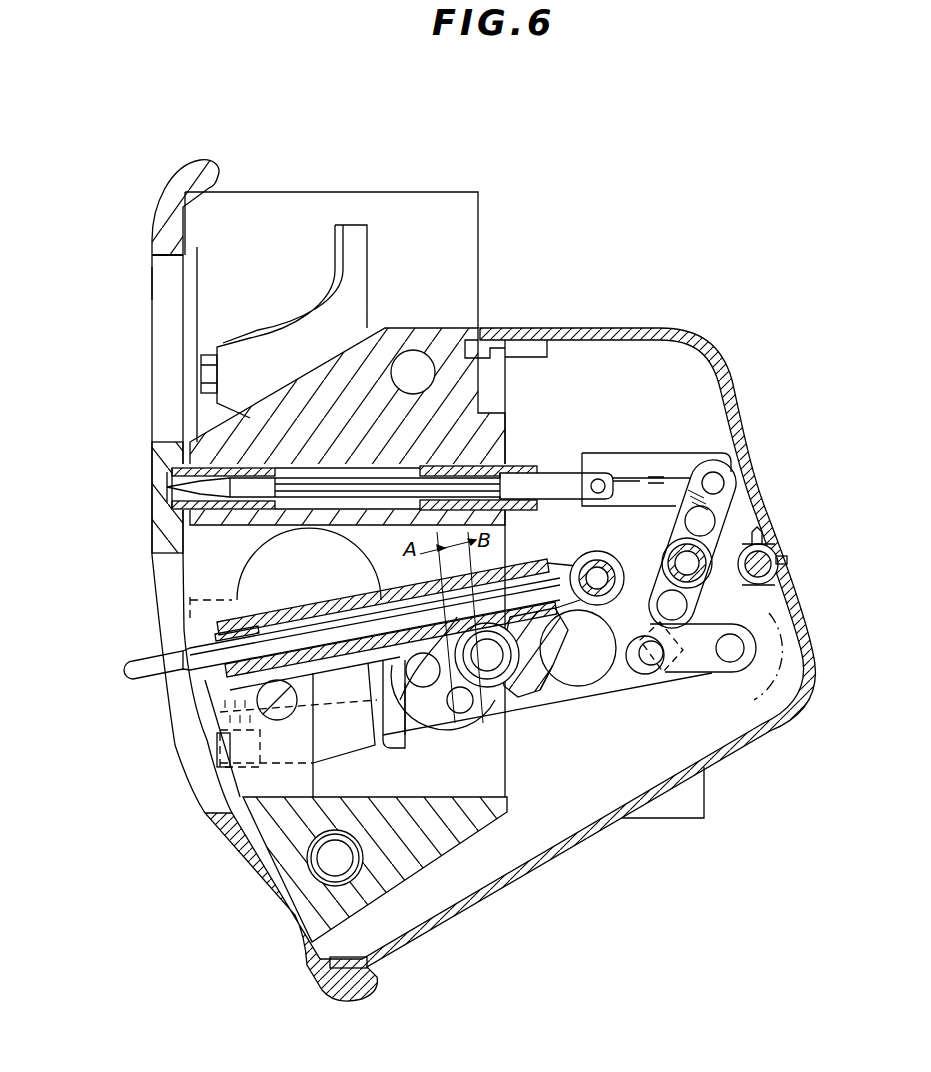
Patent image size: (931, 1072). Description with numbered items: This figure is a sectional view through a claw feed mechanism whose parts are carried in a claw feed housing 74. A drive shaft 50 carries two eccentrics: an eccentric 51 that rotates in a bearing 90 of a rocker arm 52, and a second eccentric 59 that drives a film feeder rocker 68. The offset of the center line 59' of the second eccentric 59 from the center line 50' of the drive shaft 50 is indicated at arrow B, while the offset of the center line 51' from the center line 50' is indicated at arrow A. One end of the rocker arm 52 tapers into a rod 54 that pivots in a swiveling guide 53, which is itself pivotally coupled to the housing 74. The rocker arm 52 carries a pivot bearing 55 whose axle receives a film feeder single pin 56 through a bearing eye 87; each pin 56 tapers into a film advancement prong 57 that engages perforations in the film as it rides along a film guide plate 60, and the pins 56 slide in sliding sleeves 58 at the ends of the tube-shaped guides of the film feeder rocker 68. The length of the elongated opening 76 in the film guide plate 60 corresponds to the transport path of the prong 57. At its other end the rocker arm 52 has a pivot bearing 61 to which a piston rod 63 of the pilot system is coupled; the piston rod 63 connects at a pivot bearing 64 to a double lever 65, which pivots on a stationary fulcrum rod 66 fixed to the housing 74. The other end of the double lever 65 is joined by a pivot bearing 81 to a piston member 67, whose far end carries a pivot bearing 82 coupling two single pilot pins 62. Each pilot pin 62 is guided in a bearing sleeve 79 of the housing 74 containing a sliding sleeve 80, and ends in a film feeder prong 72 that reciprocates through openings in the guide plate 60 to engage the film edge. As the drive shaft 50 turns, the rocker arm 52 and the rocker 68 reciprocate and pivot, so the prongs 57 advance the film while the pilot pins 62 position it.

The claw feed housing 74 is at (470, 338).
The bearing sleeve 79 is at (363, 437).
The single pilot pin 62 is at (265, 432).
The sliding sleeve 80 is at (203, 447).
The pivot bearing 82 is at (599, 478).
The piston member 67 is at (637, 493).
The pivot bearing 81 is at (714, 475).
The double lever 65 is at (704, 521).
The film feeder prong 72 is at (183, 495).
The sliding sleeve 58 is at (207, 633).
The film advancement prong 57 is at (140, 662).
The center line of eccentric 51' is at (397, 618).
The pivot bearing 55 is at (592, 552).
The bearing eye 87 is at (606, 556).
The stationary fulcrum rod 66 is at (693, 578).
The piston rod 63 is at (743, 618).
The film feeder single pin 56 is at (190, 670).
The film feeder rocker 68 is at (378, 712).
The drive shaft 50 is at (443, 697).
The center line of drive shaft 50' is at (487, 695).
The eccentric 51 is at (463, 668).
The second eccentric 59 is at (534, 685).
The center line of second eccentric 59' is at (538, 726).
The pivot bearing 64 is at (648, 658).
The rocker arm 52 is at (672, 685).
The pivot bearing 61 is at (728, 655).
The swiveling guide 53 is at (335, 748).
The rod 54 is at (383, 740).
The bearing 90 is at (413, 715).
The elongated opening 76 is at (203, 778).
The film guide plate 60 is at (253, 851).